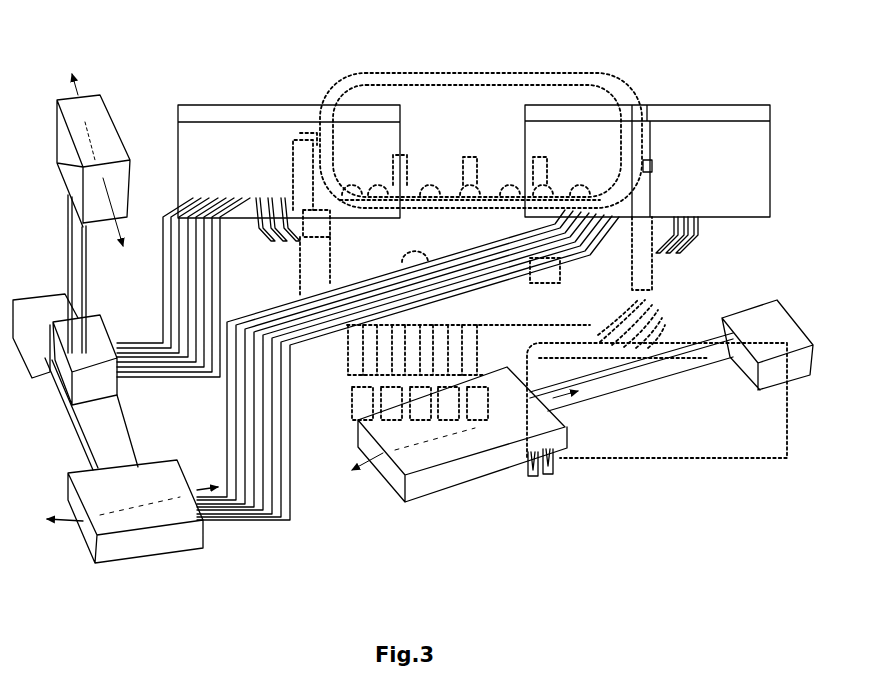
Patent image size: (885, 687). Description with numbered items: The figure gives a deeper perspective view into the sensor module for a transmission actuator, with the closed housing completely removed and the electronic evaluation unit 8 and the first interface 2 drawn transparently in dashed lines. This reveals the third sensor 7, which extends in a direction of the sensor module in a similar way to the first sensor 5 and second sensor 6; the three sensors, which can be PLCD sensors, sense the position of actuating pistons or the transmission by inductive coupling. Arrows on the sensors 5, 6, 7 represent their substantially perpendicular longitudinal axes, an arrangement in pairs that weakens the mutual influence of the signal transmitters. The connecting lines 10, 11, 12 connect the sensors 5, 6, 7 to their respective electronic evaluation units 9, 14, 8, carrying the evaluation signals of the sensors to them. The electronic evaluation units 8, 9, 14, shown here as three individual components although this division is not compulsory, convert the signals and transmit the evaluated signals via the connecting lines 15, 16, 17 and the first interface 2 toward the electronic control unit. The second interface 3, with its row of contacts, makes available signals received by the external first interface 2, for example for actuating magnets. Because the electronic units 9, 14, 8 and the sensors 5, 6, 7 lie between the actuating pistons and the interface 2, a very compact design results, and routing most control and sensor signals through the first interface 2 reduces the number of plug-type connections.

The first interface 2 is at (510, 72).
The second interface 3 is at (350, 403).
The first sensor 5 is at (70, 95).
The second sensor 6 is at (152, 565).
The third sensor 7 is at (436, 503).
The electronic evaluation unit 8 is at (716, 443).
The electronic evaluation unit 9 is at (218, 100).
The connecting line 10 is at (222, 402).
The connecting line 11 is at (160, 287).
The connecting line 12 is at (548, 482).
The electronic evaluation unit 14 is at (697, 100).
The connecting line 15 is at (655, 326).
The connecting line 16 is at (253, 242).
The connecting line 17 is at (684, 257).